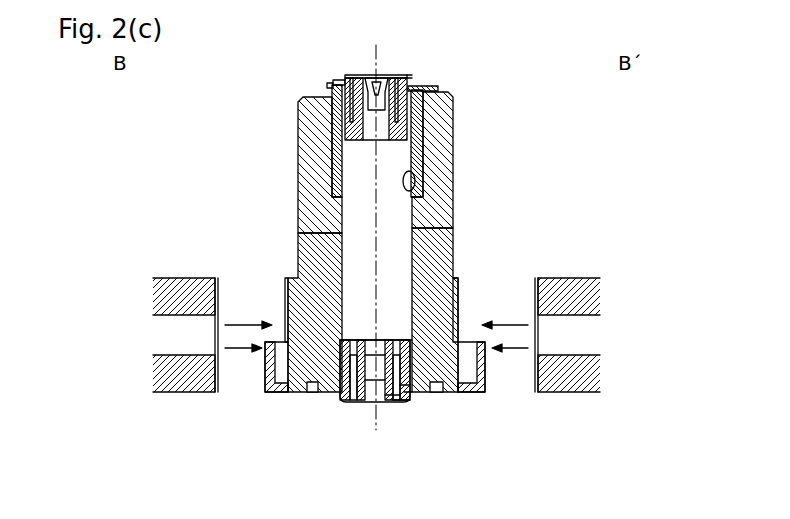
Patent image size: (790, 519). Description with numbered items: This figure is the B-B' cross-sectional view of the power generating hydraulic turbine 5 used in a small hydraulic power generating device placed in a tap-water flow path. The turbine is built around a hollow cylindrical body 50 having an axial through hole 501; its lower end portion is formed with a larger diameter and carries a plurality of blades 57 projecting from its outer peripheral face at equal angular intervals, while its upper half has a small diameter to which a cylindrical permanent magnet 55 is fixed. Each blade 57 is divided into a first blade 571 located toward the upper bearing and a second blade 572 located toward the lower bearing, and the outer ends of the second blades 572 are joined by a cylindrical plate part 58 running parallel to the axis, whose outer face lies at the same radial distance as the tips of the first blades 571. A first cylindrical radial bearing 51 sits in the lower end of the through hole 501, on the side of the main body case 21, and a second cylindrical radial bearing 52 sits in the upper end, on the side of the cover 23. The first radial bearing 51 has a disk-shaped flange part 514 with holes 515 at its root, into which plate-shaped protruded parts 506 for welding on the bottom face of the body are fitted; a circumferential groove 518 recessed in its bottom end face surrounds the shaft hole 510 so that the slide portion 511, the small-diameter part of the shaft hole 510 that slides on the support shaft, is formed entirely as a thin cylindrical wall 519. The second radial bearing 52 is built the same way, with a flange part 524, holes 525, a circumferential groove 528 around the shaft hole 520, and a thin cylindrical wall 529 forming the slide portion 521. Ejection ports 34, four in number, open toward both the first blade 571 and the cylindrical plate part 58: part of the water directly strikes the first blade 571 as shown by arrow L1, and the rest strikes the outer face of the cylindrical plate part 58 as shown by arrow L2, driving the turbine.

The power generating hydraulic turbine 5 is at (462, 142).
The cylindrical permanent magnet 55 is at (298, 142).
The hollow cylindrical body 50 is at (296, 250).
The blade 57 is at (192, 190).
The first blade 571 is at (286, 330).
The second blade 572 is at (280, 342).
The cylindrical plate part 58 is at (265, 383).
The second radial bearing 52 is at (349, 70).
The slide portion 521 is at (364, 74).
The shaft hole 520 is at (400, 76).
The circumferential groove 528 is at (410, 78).
The hole 525 is at (330, 84).
The disk-shaped flange part 524 is at (326, 86).
The thin cylindrical wall 529 is at (418, 86).
The through hole 501 is at (414, 183).
The protruded part for welding 506 is at (420, 340).
The first radial bearing 51 is at (350, 408).
The shaft hole 510 is at (368, 404).
The slide portion 511 is at (378, 402).
The circumferential groove 518 is at (397, 403).
The thin cylindrical wall 519 is at (401, 404).
The disk-shaped flange part 514 is at (418, 401).
The hole 515 is at (404, 402).
The cover 23 is at (175, 290).
The main body case 21 is at (170, 358).
The ejection port 34 is at (188, 328).
The arrow L1 is at (162, 380).
The arrow L2 is at (210, 393).